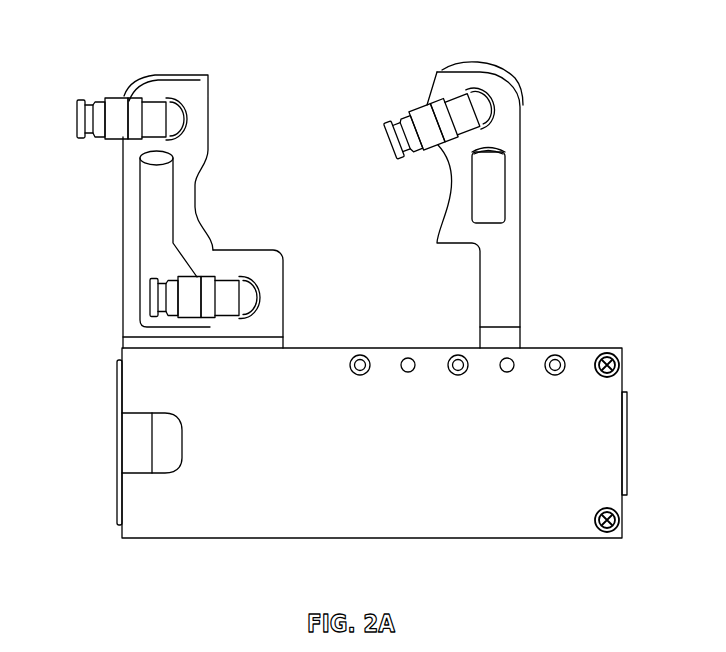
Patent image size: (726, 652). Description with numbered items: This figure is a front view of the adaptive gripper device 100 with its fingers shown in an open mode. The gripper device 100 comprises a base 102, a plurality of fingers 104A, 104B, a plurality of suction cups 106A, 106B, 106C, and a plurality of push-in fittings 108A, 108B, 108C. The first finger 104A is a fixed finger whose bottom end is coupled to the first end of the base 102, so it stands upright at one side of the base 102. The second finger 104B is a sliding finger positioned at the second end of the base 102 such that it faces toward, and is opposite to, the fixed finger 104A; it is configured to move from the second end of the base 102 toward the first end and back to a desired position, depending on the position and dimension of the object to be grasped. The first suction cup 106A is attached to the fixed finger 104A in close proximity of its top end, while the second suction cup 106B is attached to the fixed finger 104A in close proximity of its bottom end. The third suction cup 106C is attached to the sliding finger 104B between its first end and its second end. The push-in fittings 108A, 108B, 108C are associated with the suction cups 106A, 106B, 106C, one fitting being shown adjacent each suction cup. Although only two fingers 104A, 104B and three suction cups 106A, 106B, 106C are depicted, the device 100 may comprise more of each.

The adaptive gripper device 100 is at (327, 337).
The base 102 is at (460, 520).
The first finger 104A is at (212, 226).
The second finger 104B is at (502, 205).
The first suction cup 106A is at (212, 115).
The second suction cup 106B is at (283, 292).
The third suction cup 106C is at (517, 73).
The push-in fitting 108A is at (123, 123).
The push-in fitting 108B is at (197, 307).
The push-in fitting 108C is at (470, 145).